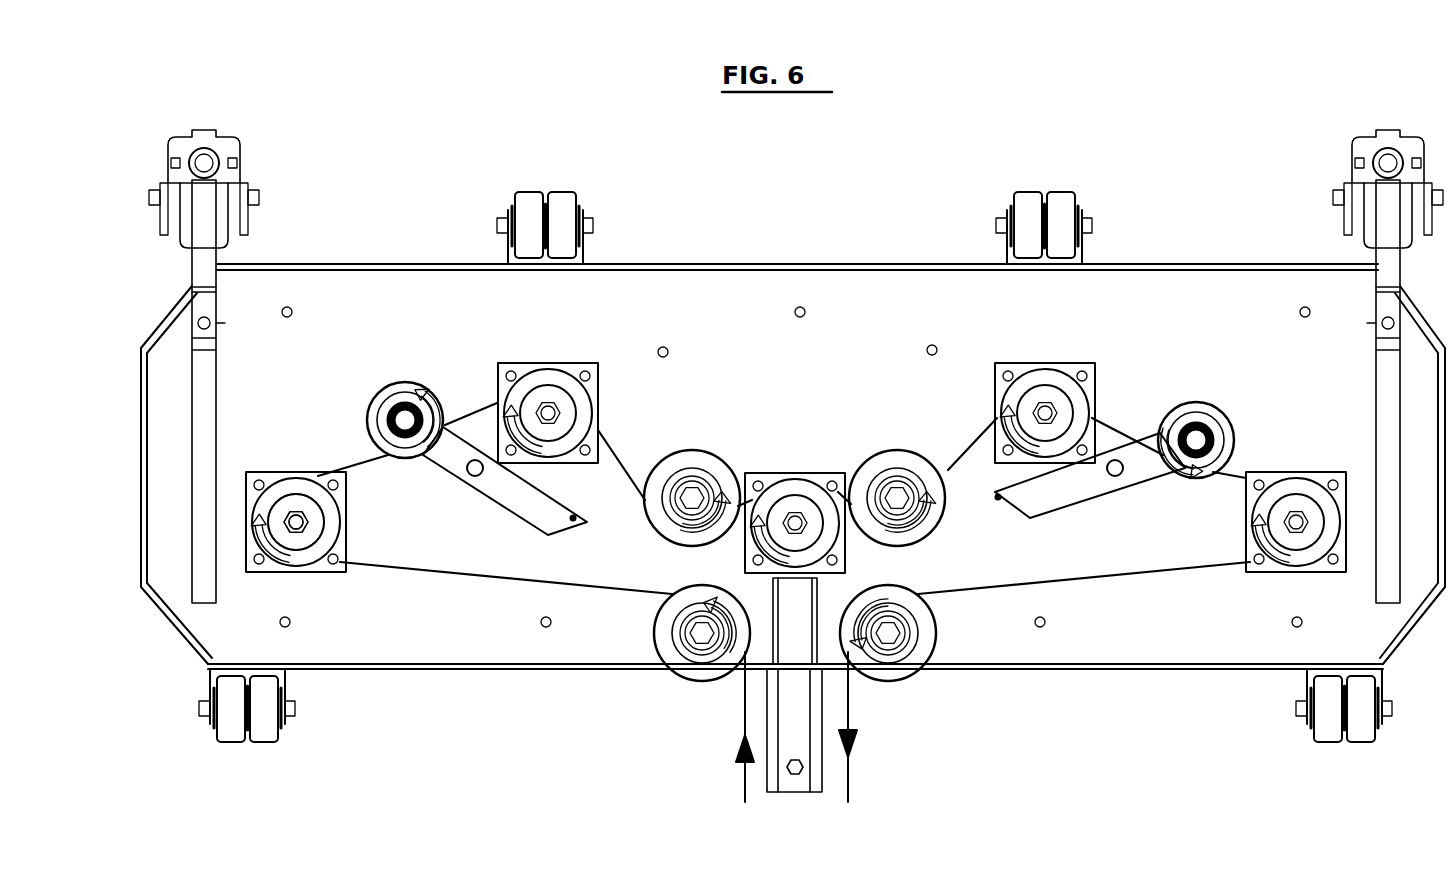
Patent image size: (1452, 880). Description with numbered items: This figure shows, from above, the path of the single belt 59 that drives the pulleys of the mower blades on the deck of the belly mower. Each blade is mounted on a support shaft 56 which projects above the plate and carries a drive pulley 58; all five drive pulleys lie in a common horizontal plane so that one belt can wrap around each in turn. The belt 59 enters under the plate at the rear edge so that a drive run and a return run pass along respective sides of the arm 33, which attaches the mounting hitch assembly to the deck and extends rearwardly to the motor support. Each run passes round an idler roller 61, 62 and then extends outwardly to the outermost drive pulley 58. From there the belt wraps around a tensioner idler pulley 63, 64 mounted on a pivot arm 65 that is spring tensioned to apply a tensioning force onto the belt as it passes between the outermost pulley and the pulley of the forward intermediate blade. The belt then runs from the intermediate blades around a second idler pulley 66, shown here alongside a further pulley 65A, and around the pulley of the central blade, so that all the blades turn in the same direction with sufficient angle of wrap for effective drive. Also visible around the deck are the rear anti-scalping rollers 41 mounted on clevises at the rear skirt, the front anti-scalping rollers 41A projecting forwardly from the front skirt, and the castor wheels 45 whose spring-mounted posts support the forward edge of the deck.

The arm 33 is at (825, 721).
The rear anti-scalping roller 41 is at (278, 738).
The anti-scalping roller 41A is at (536, 194).
The castor wheel 45 is at (178, 366).
The support shaft 56 is at (271, 488).
The drive pulley 58 is at (328, 549).
The belt 59 is at (506, 606).
The idler roller 61 is at (682, 664).
The idler roller 62 is at (916, 664).
The tensioner idler pulley 63 is at (397, 390).
The tensioner idler pulley 64 is at (1216, 412).
The pivot arm 65 is at (804, 496).
The pulley 65A is at (727, 462).
The second idler pulley 66 is at (908, 462).